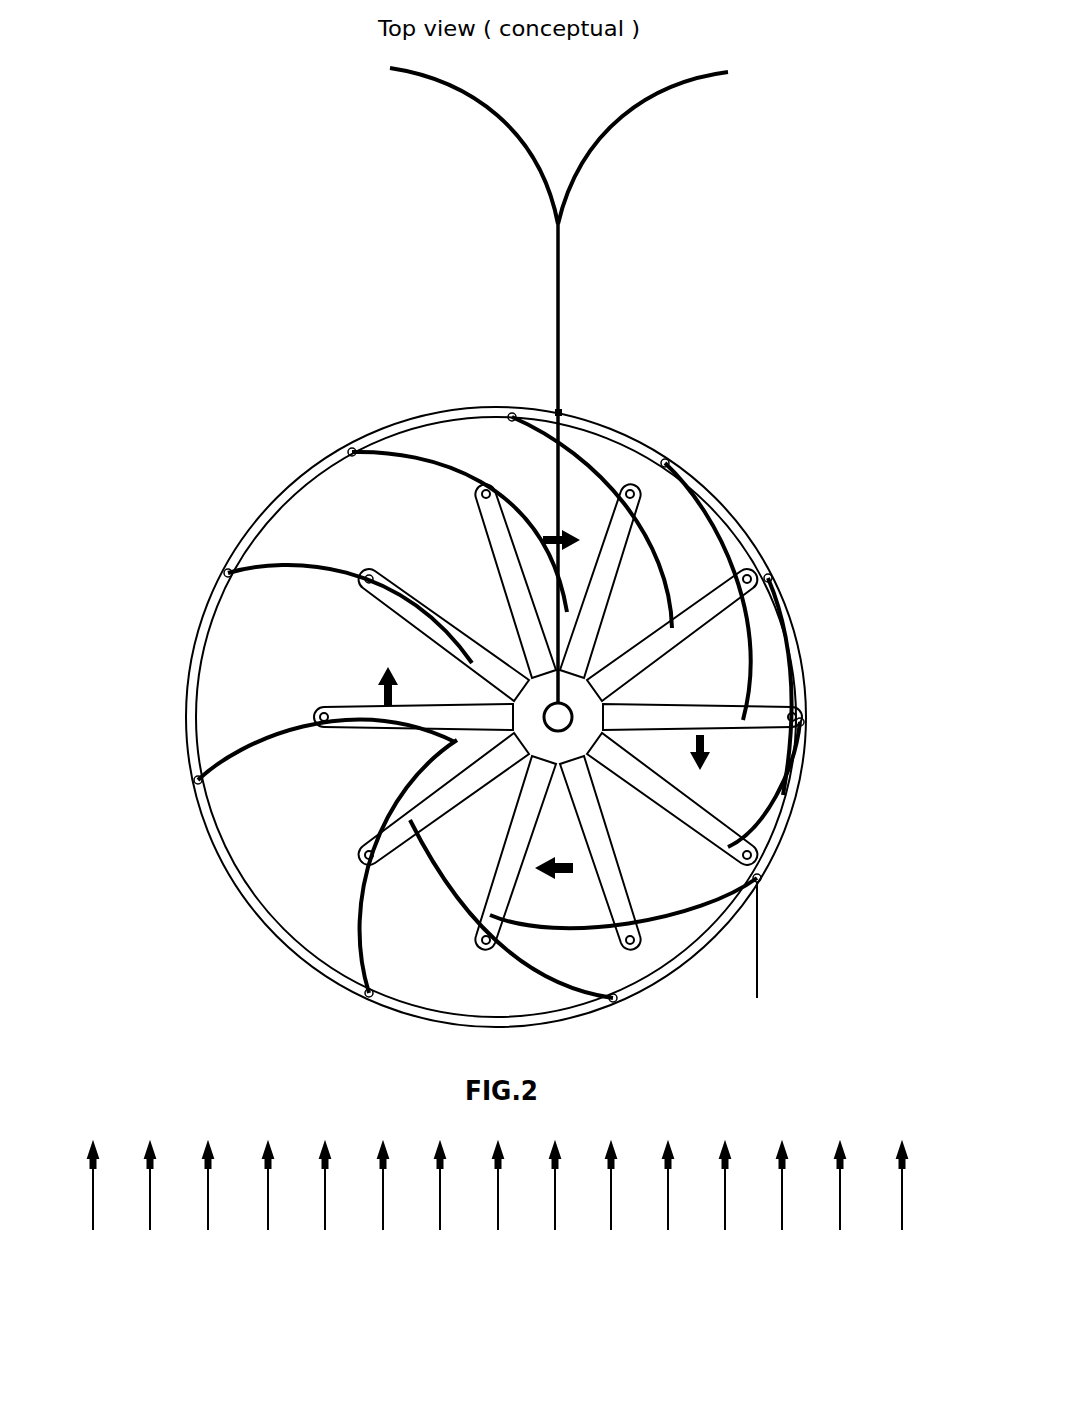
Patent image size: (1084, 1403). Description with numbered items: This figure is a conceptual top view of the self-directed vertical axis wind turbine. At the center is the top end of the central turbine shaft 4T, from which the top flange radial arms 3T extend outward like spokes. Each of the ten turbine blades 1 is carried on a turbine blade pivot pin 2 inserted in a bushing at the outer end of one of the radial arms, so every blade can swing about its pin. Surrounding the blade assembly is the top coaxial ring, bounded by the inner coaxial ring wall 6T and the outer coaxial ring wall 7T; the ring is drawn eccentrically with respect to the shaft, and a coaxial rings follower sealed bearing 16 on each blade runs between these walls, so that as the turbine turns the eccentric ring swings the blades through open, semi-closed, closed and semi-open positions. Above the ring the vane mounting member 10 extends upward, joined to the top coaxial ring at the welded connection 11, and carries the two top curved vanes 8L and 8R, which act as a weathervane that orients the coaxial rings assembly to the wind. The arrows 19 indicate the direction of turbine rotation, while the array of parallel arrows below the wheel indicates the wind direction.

The turbine blade 1 is at (357, 937).
The turbine blade pivot pin 2 is at (505, 700).
The top flange radial arms 3T is at (533, 733).
The top end of central turbine shaft 4T is at (556, 714).
The inner coaxial ring wall 6T is at (323, 477).
The outer coaxial ring wall 7T is at (452, 412).
The top left curved vane 8L is at (498, 113).
The top right curved vane 8R is at (623, 110).
The vane mounting member 10 is at (566, 361).
The welded connection of top coaxial rings and vane mounting member 11 is at (558, 412).
The coaxial rings follower sealed bearing 16 is at (616, 999).
The rotation direction arrows 19 is at (705, 758).